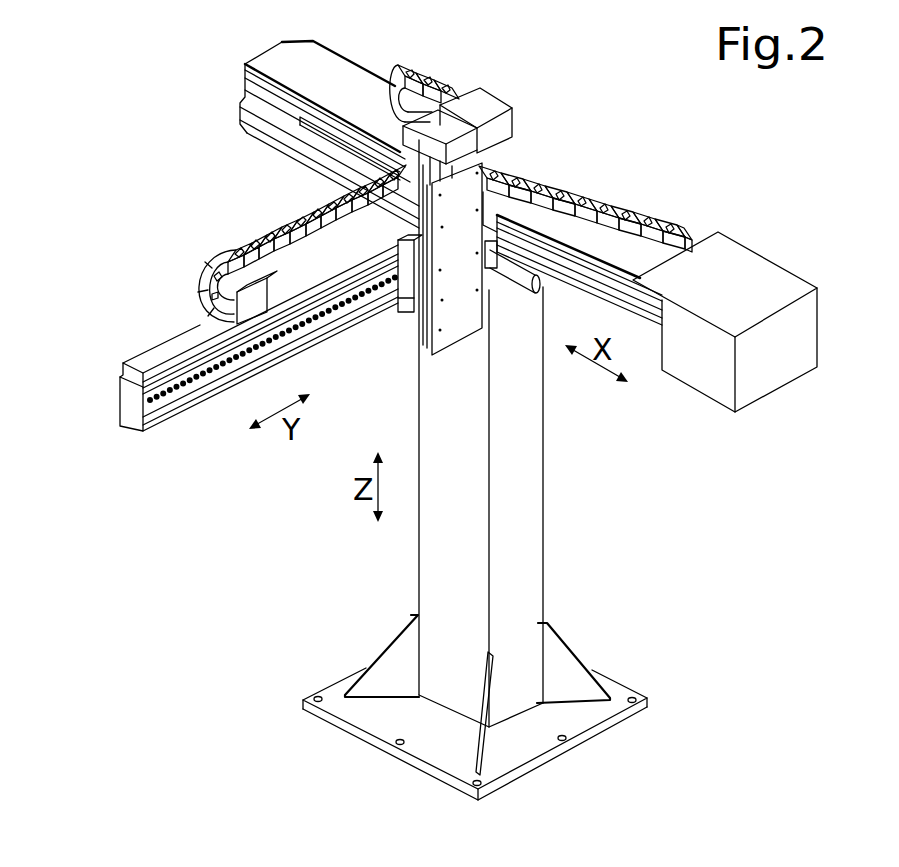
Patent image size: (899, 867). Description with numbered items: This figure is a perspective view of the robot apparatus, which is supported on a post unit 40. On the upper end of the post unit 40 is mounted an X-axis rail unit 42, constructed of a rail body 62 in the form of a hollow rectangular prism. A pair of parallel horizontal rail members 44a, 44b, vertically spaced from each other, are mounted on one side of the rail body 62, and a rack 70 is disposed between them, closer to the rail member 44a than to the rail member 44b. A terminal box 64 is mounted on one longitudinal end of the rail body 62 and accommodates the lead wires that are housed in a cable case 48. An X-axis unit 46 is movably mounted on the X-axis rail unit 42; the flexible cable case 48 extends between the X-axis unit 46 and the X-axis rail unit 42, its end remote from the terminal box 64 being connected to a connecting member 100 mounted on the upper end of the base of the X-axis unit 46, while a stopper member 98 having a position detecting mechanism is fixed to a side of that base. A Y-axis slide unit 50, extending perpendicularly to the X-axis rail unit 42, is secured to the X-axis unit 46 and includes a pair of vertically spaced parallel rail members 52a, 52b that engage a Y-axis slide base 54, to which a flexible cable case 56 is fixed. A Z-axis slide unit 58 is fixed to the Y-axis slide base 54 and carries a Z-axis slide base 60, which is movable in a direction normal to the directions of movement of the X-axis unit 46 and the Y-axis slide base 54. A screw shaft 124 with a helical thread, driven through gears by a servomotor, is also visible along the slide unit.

The post unit 40 is at (528, 557).
The X-axis rail unit 42 is at (286, 119).
The rail member 44a is at (245, 77).
The rail member 44b is at (257, 127).
The X-axis unit 46 is at (537, 193).
The cable case 48 is at (597, 186).
The Y-axis slide unit 50 is at (245, 373).
The rail member 52a is at (142, 377).
The rail member 52b is at (205, 397).
The Y-axis slide base 54 is at (404, 320).
The cable case 56 is at (230, 257).
The Z-axis slide unit 58 is at (470, 152).
The Z-axis slide base 60 is at (462, 328).
The rail body 62 is at (586, 214).
The terminal box 64 is at (770, 300).
The rack 70 is at (327, 133).
The stopper member 98 is at (532, 289).
The connecting member 100 is at (478, 104).
The screw shaft 124 is at (296, 330).